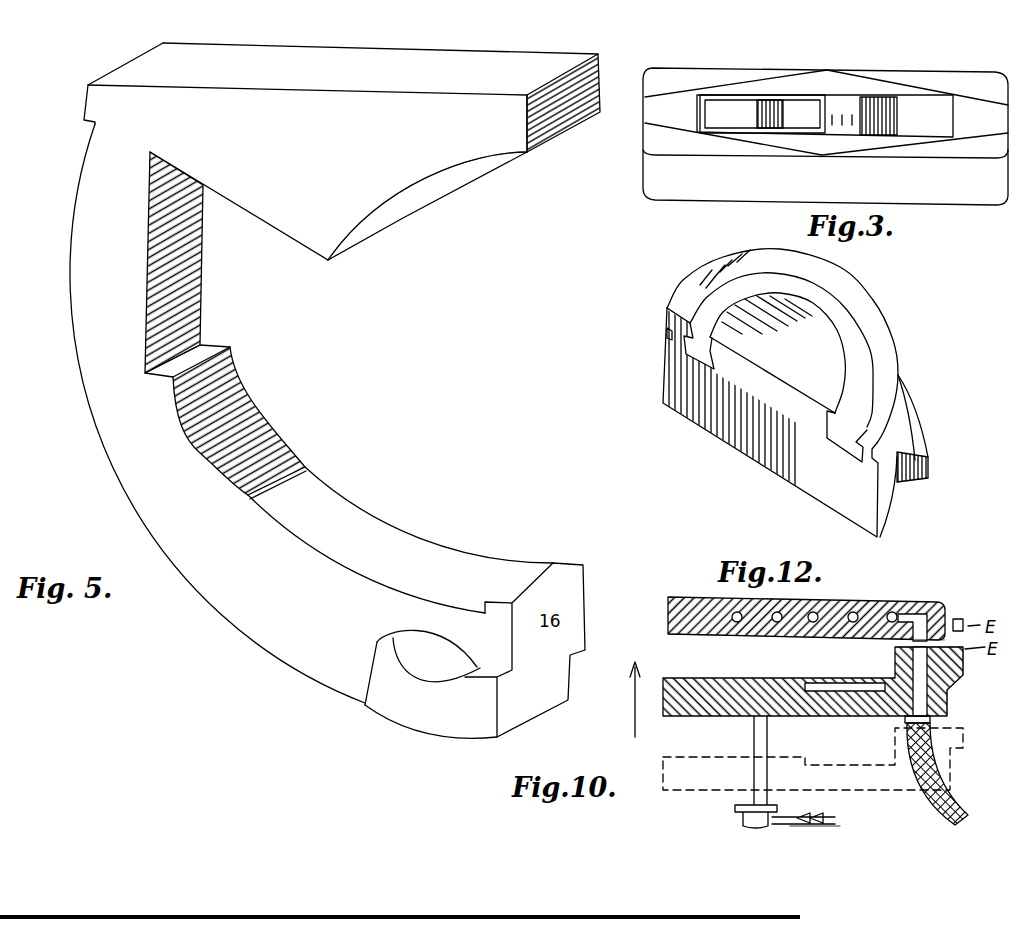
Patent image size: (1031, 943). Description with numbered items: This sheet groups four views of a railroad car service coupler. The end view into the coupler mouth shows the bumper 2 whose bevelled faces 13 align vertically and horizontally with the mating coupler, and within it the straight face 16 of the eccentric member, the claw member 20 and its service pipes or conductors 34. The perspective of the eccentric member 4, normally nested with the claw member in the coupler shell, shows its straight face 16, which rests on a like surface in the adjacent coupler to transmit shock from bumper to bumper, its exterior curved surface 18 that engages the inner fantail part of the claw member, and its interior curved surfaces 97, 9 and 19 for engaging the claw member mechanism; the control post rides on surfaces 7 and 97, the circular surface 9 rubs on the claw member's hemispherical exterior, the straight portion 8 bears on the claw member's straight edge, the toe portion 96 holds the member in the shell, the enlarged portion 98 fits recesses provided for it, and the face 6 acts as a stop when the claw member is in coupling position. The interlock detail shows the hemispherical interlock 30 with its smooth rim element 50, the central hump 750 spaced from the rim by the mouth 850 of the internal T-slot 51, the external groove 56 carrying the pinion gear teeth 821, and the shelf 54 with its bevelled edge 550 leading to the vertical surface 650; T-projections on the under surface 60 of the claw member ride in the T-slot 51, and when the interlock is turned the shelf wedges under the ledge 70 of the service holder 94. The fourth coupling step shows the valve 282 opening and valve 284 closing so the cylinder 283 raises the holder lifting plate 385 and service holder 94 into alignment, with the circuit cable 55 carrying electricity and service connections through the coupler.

In FIG. 3, the bumper 2 is at (825, 136).
In FIG. 5, the eccentric member 4 is at (85, 343).
In FIG. 5, the face of eccentric member 6 is at (367, 702).
In FIG. 5, the surface of eccentric member 7 is at (190, 300).
In FIG. 5, the straight portion 8 is at (282, 243).
In FIG. 5, the circular curved surface 9 is at (425, 192).
In FIG. 3, the bumper face 13 is at (826, 116).
In FIG. 5, the straight face 16 is at (575, 120).
In FIG. 3, the straight face 16 is at (825, 116).
In FIG. 5, the exterior curved surface 18 is at (258, 645).
In FIG. 5, the curved surface 19 is at (400, 540).
In FIG. 3, the claw member 20 is at (827, 116).
In FIG. 10, the claw member 20 is at (708, 596).
In FIG. 12, the interlock 30 is at (780, 422).
In FIG. 10, the service pipes or conductors 34 is at (892, 612).
In FIG. 12, the rim element 50 is at (782, 346).
In FIG. 12, the T-slot 51 is at (700, 363).
In FIG. 12, the shelf 54 is at (918, 470).
In FIG. 10, the circuit cable 55 is at (965, 800).
In FIG. 12, the external groove 56 is at (667, 333).
In FIG. 10, the under surface 60 is at (712, 640).
In FIG. 10, the projection surface or ledge 70 is at (955, 688).
In FIG. 10, the service holder 94 is at (963, 668).
In FIG. 5, the projecting toe portion 96 is at (562, 570).
In FIG. 5, the curved surface 97 is at (250, 430).
In FIG. 5, the enlarged portion 98 is at (431, 684).
In FIG. 10, the valve 282 is at (818, 820).
In FIG. 10, the cylinder 283 is at (742, 818).
In FIG. 10, the valve 284 is at (833, 827).
In FIG. 10, the holder lifting plate 385 is at (730, 712).
In FIG. 12, the bevelled surface edge 550 is at (905, 400).
In FIG. 12, the vertical surface 650 is at (925, 476).
In FIG. 12, the central hump 750 is at (777, 353).
In FIG. 12, the pinion gear 821 is at (665, 322).
In FIG. 12, the mouth 850 is at (828, 415).